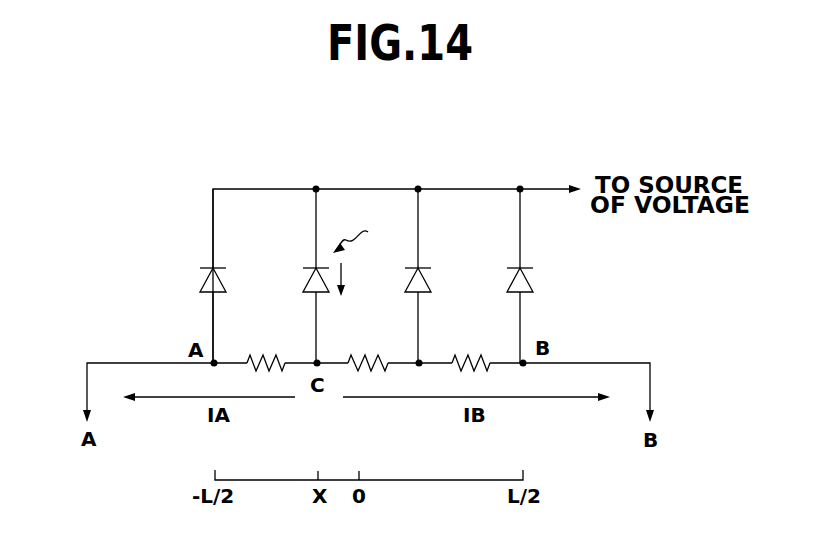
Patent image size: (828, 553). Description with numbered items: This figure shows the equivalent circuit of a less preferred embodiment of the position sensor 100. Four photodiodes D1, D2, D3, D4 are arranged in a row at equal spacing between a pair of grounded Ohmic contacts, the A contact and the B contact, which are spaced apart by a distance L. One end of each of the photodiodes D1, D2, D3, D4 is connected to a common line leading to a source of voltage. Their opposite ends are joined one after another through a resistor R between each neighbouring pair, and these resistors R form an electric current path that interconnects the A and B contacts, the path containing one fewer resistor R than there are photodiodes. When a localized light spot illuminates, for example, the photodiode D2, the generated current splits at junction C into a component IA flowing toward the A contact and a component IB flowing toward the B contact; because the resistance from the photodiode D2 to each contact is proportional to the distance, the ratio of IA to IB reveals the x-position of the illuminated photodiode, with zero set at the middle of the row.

The position sensor 100 is at (388, 168).
The photodiode D1 is at (196, 273).
The photodiode D2 is at (299, 273).
The photodiode D3 is at (435, 273).
The photodiode D4 is at (540, 273).
The resistor R is at (271, 347).